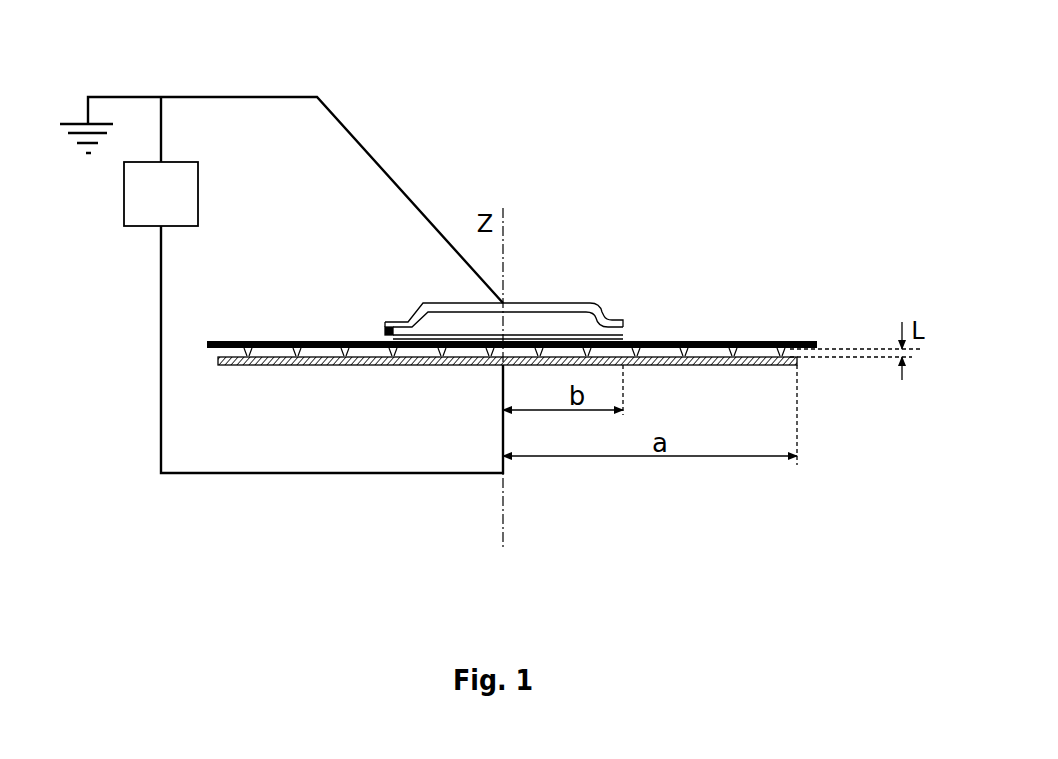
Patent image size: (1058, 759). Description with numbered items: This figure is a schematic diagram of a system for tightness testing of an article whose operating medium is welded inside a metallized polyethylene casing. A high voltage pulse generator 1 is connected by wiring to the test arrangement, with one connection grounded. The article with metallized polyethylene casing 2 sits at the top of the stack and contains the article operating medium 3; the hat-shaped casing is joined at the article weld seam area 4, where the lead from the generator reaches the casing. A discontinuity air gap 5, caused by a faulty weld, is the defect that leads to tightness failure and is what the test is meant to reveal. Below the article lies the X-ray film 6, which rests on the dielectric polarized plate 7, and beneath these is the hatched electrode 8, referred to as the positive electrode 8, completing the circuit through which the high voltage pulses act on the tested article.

The high voltage pulse generator 1 is at (161, 194).
The article with metallized polyethylene casing 2 is at (560, 302).
The article operating medium 3 is at (583, 313).
The article weld seam area 4 is at (385, 330).
The discontinuity air gap 5 is at (628, 328).
The X-ray film 6 is at (672, 341).
The dielectric polarized plate 7 is at (737, 341).
The positive electrode 8 is at (800, 365).